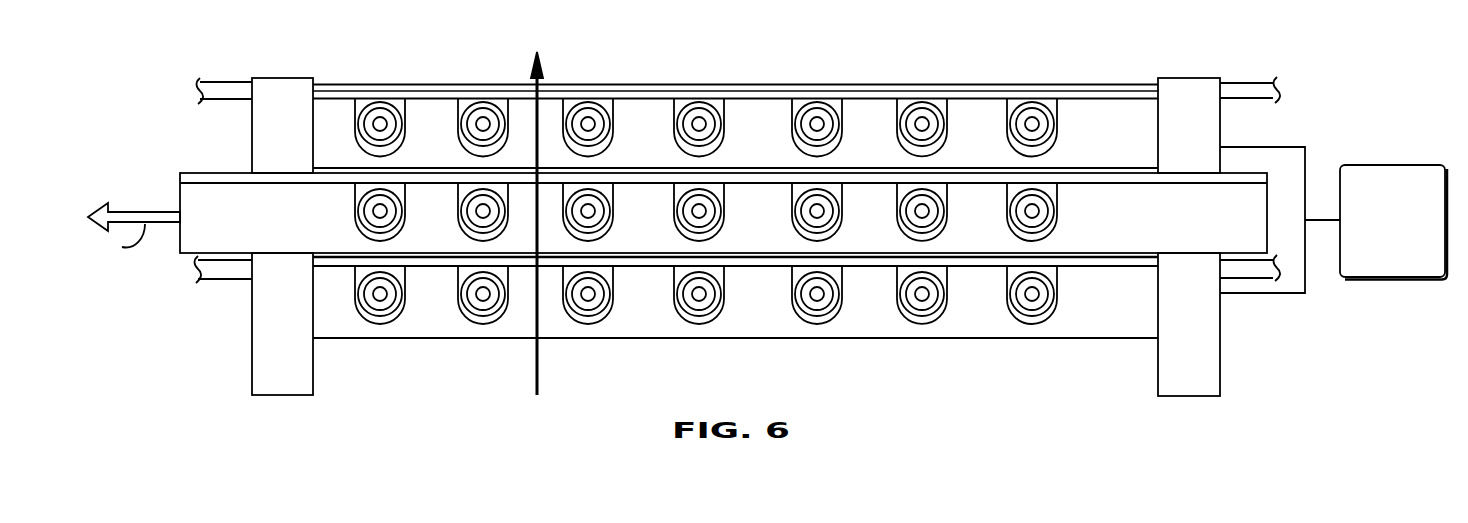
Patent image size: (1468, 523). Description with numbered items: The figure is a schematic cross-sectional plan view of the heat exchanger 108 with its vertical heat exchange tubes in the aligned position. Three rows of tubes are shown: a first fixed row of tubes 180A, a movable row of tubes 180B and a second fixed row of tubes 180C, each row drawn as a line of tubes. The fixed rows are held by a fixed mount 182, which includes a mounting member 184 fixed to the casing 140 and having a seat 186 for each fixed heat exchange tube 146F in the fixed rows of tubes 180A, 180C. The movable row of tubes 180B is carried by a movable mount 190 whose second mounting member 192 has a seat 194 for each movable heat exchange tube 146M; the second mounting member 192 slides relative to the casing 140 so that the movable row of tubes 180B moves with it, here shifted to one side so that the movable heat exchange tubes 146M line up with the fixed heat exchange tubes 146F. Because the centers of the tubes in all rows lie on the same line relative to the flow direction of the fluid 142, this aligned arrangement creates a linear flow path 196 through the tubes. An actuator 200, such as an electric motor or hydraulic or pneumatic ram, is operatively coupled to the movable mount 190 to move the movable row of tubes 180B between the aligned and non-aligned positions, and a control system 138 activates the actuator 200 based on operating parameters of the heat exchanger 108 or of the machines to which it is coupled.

The heat exchanger 108 is at (1300, 53).
The control system 138 is at (1416, 262).
The casing 140 is at (275, 305).
The fluid 142 is at (532, 353).
The fixed heat exchange tubes 146F is at (483, 293).
The movable heat exchange tubes 146M is at (699, 211).
The first fixed row of tubes 180A is at (342, 123).
The movable row of tubes 180B is at (340, 211).
The second fixed row of tubes 180C is at (344, 307).
The fixed mount 182 is at (1083, 78).
The mounting member 184 is at (969, 85).
The seat 186 is at (725, 110).
The movable mount 190 is at (730, 246).
The second mounting member 192 is at (1073, 178).
The seat 194 is at (608, 213).
The linear flow path 196 is at (523, 245).
The actuator 200 is at (1283, 196).